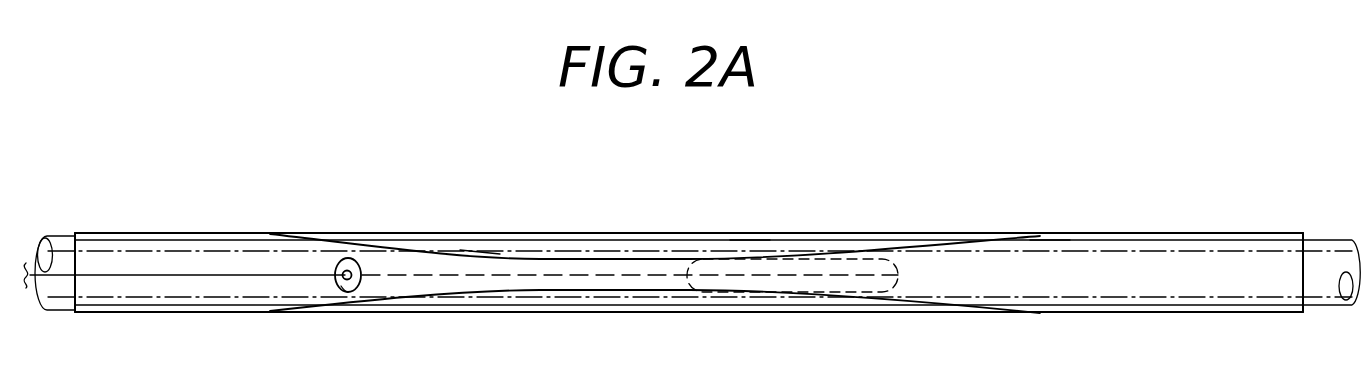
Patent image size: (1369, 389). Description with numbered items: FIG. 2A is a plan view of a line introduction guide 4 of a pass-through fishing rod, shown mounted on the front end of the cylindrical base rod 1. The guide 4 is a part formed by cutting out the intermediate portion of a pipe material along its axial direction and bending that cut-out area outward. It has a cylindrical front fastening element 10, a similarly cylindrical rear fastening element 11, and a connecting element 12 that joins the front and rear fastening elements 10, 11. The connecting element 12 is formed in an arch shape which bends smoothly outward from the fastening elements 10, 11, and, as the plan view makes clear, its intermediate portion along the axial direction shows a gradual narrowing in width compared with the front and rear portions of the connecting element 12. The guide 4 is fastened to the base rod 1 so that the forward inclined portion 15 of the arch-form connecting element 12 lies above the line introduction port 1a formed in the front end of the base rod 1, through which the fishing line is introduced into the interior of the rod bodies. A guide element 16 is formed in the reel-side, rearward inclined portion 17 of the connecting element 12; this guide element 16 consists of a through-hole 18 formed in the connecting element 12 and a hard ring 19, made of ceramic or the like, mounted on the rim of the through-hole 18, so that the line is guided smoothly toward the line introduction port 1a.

The base rod 1 is at (606, 247).
The line introduction port 1a is at (847, 273).
The line introduction guide 4 is at (1042, 265).
The front fastening element 10 is at (1178, 248).
The rear fastening element 11 is at (208, 258).
The connecting element 12 is at (538, 262).
The forward inclined portion 15 is at (745, 250).
The guide element 16 is at (365, 262).
The reel-side inclined portion 17 is at (479, 250).
The through-hole 18 is at (350, 257).
The hard ring 19 is at (334, 283).